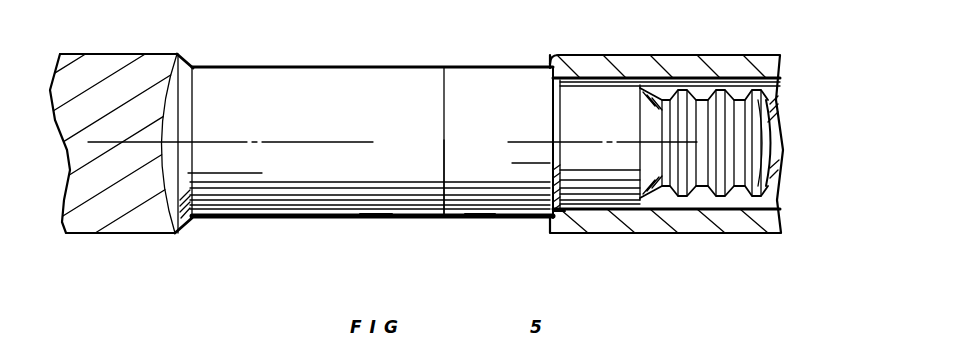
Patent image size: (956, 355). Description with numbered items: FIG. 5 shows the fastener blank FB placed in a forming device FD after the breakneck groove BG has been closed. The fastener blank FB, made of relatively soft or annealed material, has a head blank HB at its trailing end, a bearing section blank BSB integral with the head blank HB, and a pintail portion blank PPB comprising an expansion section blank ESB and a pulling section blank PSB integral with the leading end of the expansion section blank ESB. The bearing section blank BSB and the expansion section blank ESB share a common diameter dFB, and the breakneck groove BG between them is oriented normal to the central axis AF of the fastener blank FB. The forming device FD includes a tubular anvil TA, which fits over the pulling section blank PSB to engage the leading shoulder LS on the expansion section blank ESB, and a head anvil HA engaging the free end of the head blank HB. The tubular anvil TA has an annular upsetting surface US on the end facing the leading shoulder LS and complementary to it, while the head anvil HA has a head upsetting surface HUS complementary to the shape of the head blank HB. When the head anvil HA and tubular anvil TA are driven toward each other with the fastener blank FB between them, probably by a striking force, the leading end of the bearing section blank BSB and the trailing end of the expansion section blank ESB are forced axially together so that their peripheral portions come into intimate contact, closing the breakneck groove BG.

The forming device FD is at (112, 48).
The head anvil HA is at (139, 62).
The head upsetting surface HUS is at (168, 88).
The head blank HB is at (168, 150).
The pulling section blank PSB is at (192, 228).
The fastener blank FB is at (350, 60).
The common diameter dFB is at (277, 70).
The central axis AF is at (296, 140).
The pintail portion blank PPB is at (473, 63).
The breakneck groove BG is at (443, 192).
The bearing section blank BSB is at (376, 222).
The expansion section blank ESB is at (478, 220).
The annular upsetting surface US is at (550, 65).
The tubular anvil TA is at (664, 62).
The leading shoulder LS is at (561, 215).